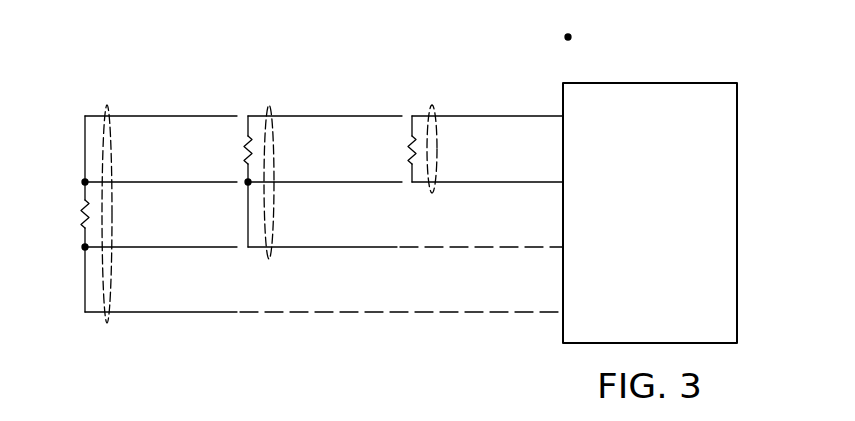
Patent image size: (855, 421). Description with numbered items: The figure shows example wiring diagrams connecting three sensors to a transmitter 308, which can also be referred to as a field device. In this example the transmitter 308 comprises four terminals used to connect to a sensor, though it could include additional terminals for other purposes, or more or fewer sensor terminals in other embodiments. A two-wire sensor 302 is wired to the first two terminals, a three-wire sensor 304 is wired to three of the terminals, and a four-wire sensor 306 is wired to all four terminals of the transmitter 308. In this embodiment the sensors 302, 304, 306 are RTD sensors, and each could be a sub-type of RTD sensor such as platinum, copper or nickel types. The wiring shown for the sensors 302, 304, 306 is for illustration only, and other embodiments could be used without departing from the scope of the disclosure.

The 2 wire sensor 302 is at (432, 107).
The 3 wire sensor 304 is at (268, 107).
The 4 wire sensor 306 is at (108, 107).
The transmitter 308 is at (670, 258).